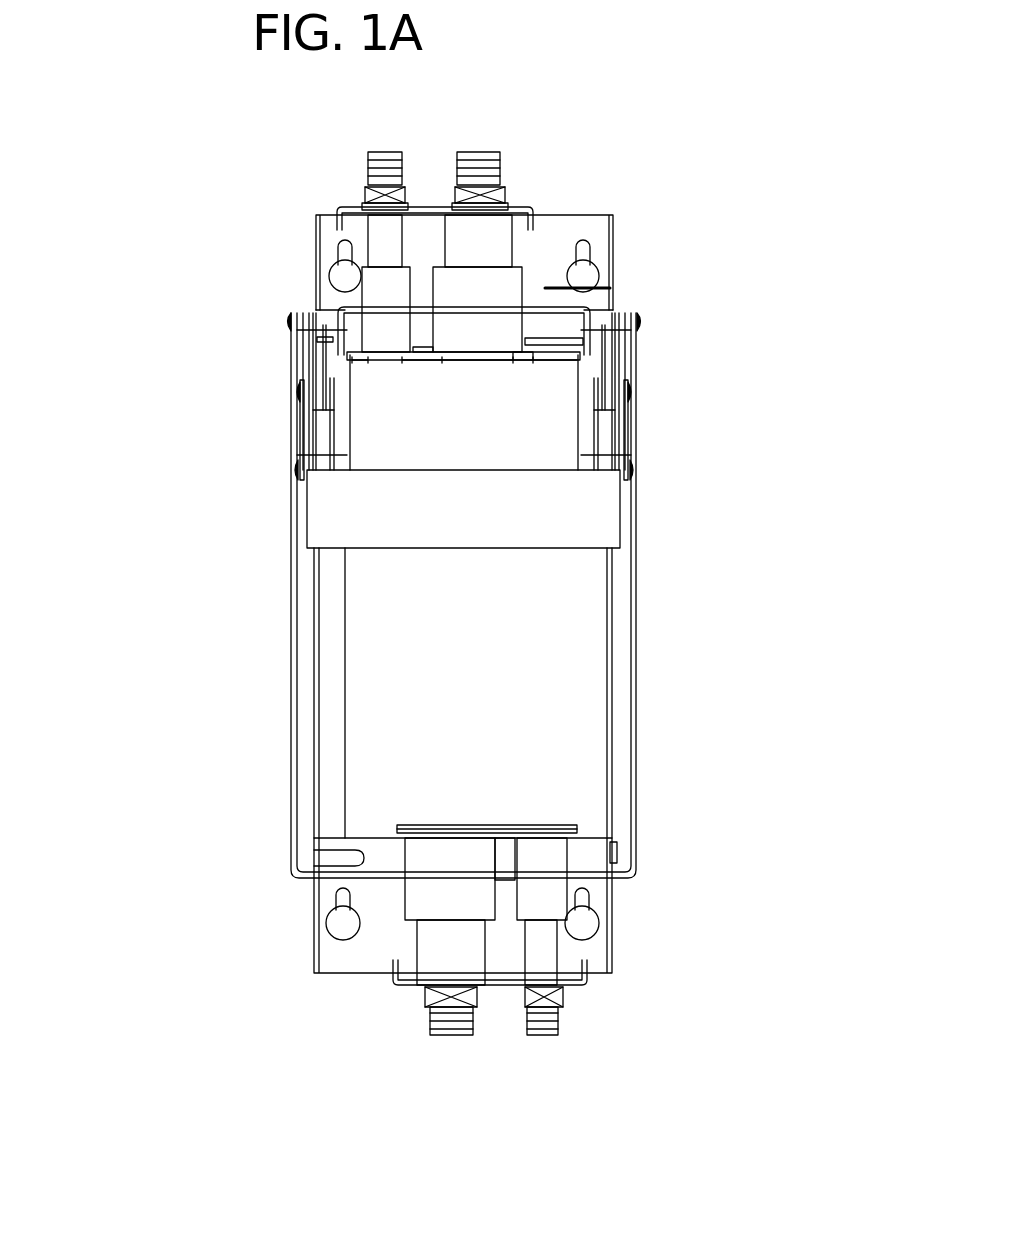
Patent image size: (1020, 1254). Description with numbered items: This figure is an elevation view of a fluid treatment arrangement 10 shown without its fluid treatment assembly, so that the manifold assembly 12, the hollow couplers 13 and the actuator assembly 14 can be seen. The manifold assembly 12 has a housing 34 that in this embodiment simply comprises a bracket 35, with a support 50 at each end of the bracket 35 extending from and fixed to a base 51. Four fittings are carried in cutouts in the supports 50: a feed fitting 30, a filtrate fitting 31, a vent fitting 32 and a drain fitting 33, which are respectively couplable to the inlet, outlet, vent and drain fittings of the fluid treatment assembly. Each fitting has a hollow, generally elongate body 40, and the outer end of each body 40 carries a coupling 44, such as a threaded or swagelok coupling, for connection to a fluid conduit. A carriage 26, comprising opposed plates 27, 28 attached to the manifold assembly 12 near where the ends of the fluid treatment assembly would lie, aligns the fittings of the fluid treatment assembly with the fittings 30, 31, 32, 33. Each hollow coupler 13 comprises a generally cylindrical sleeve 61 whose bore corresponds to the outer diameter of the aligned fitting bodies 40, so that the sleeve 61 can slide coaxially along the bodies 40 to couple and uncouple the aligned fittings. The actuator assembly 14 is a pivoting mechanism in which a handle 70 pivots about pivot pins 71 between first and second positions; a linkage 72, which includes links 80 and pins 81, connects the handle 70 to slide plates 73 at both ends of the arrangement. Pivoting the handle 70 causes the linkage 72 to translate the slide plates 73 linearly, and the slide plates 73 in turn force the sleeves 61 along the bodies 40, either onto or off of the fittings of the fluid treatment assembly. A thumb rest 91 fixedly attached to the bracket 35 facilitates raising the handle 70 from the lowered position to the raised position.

The fluid treatment arrangement 10 is at (150, 818).
The manifold assembly 12 is at (580, 213).
The hollow coupler 13 is at (395, 340).
The actuator assembly 14 is at (625, 447).
The carriage 26 is at (520, 360).
The plate 27 is at (422, 355).
The plate 28 is at (558, 825).
The feed fitting 30 is at (430, 950).
The filtrate fitting 31 is at (530, 225).
The vent fitting 32 is at (375, 228).
The drain fitting 33 is at (550, 950).
The housing 34 is at (612, 220).
The bracket 35 is at (612, 915).
The body 40 is at (503, 237).
The coupling 44 is at (365, 160).
The support 50 is at (423, 208).
The base 51 is at (327, 622).
The sleeve 61 is at (362, 340).
The handle 70 is at (605, 512).
The pivot pin 71 is at (291, 320).
The linkage 72 is at (317, 367).
The slide plate 73 is at (567, 303).
The link 80 is at (310, 432).
The pin 81 is at (287, 835).
The thumb rest 91 is at (557, 278).